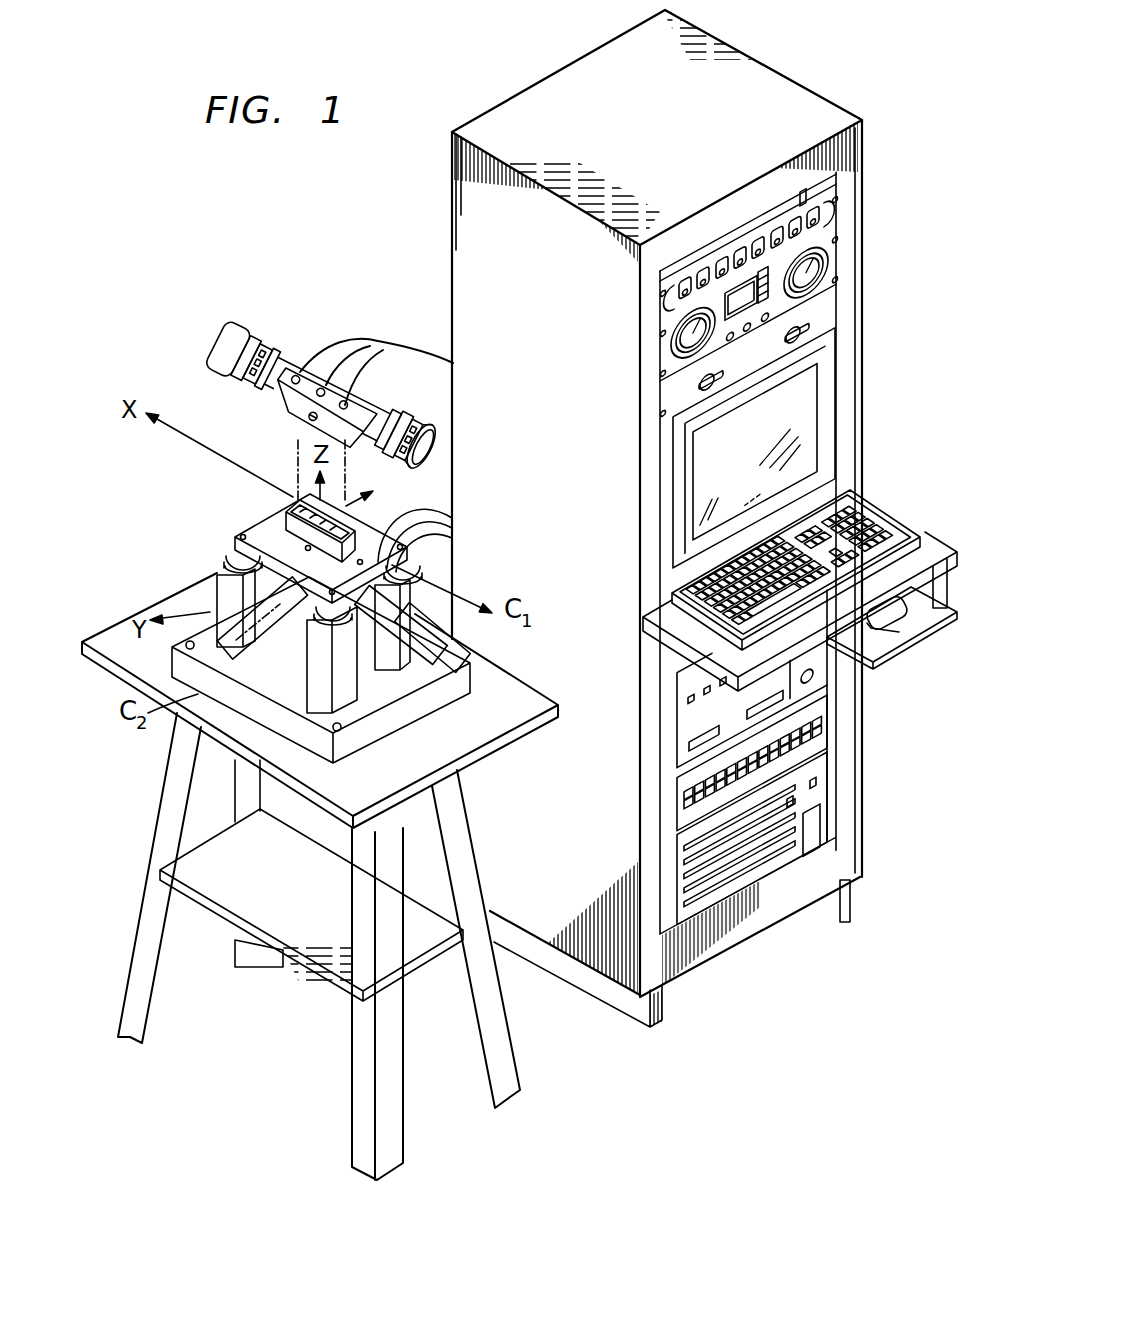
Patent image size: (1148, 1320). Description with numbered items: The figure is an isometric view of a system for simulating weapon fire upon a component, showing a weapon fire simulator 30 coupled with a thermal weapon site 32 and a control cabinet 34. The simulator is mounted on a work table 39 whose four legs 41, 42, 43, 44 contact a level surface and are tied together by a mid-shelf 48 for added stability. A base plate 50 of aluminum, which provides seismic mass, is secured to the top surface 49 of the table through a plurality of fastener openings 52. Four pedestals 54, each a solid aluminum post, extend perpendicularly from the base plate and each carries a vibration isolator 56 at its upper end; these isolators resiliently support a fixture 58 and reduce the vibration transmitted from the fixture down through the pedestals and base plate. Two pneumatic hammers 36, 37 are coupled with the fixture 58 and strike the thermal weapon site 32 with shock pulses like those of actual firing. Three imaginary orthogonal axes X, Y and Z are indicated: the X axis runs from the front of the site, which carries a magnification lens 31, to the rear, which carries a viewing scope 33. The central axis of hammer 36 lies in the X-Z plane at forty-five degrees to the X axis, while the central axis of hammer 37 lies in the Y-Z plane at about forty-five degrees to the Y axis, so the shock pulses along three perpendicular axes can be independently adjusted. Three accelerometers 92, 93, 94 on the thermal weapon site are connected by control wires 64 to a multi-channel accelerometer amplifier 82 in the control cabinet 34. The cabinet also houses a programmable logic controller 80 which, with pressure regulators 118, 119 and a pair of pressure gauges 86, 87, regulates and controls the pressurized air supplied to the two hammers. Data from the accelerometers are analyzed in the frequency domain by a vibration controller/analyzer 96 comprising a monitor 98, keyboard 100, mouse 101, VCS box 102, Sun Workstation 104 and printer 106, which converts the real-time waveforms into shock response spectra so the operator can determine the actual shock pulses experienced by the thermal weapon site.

The weapon fire simulator 30 is at (332, 631).
The magnification lens 31 is at (407, 439).
The thermal weapon site 32 is at (357, 419).
The viewing scope 33 is at (243, 357).
The control cabinet 34 is at (704, 518).
The pneumatic hammer 36 is at (446, 641).
The pneumatic hammer 37 is at (248, 612).
The work table 39 is at (322, 888).
The leg 41 is at (131, 1040).
The leg 42 is at (392, 1172).
The leg 43 is at (515, 1103).
The leg 44 is at (272, 805).
The mid-shelf 48 is at (301, 904).
The top surface 49 is at (518, 707).
The base plate 50 is at (438, 698).
The fastener openings 52 is at (188, 648).
The pedestal 54 is at (218, 576).
The vibration isolator 56 is at (228, 553).
The fixture 58 is at (272, 528).
The control wires 64 is at (393, 343).
The programmable logic controller 80 is at (834, 258).
The multi-channel accelerometer amplifier 82 is at (837, 218).
The pressure gauge 86 is at (670, 352).
The pressure gauge 87 is at (828, 283).
The accelerometer 92 is at (295, 379).
The accelerometer 93 is at (320, 392).
The accelerometer 94 is at (343, 404).
The vibration controller/analyzer 96 is at (622, 572).
The monitor 98 is at (773, 482).
The keyboard 100 is at (853, 507).
The mouse 101 is at (900, 647).
The VCS box 102 is at (678, 768).
The Sun Workstation 104 is at (822, 742).
The printer 106 is at (822, 810).
The pressure regulator 118 is at (713, 389).
The pressure regulator 119 is at (801, 343).